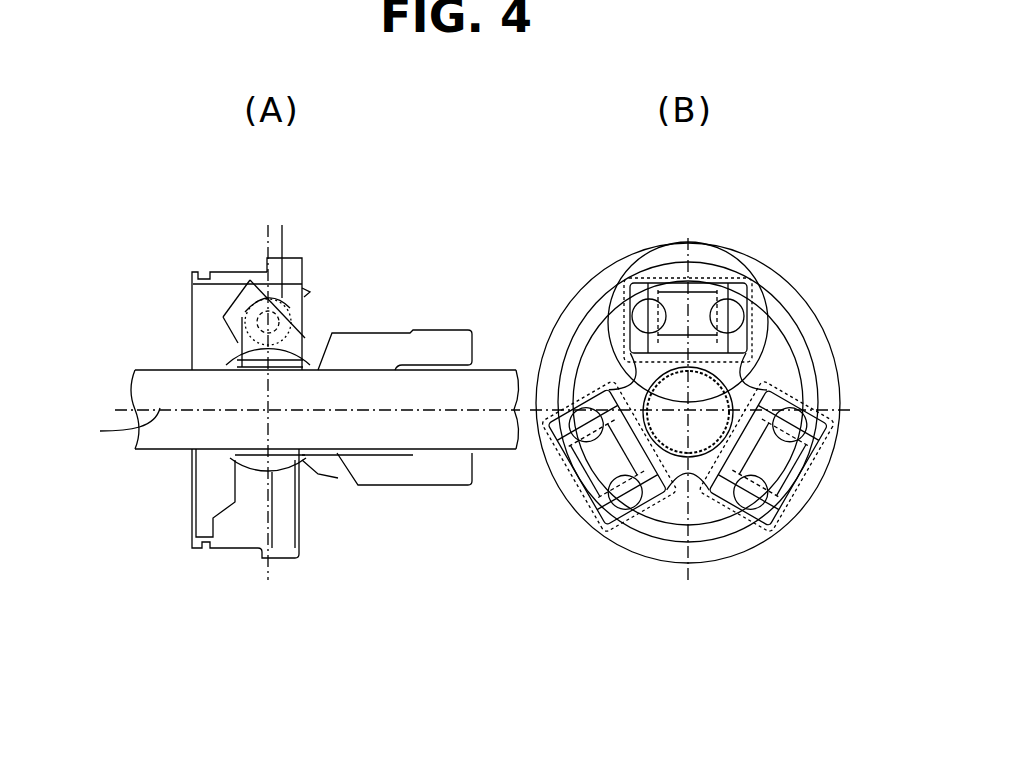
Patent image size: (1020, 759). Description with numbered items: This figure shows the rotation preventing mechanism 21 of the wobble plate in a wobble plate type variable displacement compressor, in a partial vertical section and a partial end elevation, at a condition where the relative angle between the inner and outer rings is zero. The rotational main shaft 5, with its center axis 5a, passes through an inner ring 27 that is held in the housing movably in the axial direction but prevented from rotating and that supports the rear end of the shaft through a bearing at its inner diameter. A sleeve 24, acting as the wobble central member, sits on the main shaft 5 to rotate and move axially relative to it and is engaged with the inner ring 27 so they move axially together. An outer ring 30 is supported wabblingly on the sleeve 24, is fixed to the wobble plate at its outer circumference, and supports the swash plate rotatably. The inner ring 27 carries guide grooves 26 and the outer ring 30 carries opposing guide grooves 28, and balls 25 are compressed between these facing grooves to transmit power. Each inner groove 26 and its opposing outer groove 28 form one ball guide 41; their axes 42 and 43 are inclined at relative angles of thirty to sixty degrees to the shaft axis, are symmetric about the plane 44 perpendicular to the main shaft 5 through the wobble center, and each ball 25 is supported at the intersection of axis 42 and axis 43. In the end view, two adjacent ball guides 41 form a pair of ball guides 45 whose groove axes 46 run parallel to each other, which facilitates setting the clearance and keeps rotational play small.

The rotational main shaft 5 is at (205, 420).
The center axis 5a is at (100, 431).
The rotation preventing mechanism 21 is at (75, 640).
The sleeve 24 is at (278, 466).
The ball 25 is at (268, 322).
The guide groove of inner ring 26 is at (288, 303).
The inner ring 27 is at (404, 468).
The guide groove of outer ring 28 is at (283, 268).
The outer ring 30 is at (260, 508).
The ball guide 41 is at (558, 339).
The axis of guide groove 42 is at (228, 345).
The axis of guide groove 43 is at (308, 347).
The plane passing through wobble center 44 is at (266, 247).
The pair of ball guides 45 is at (743, 259).
The axes of guide grooves 46 is at (725, 271).